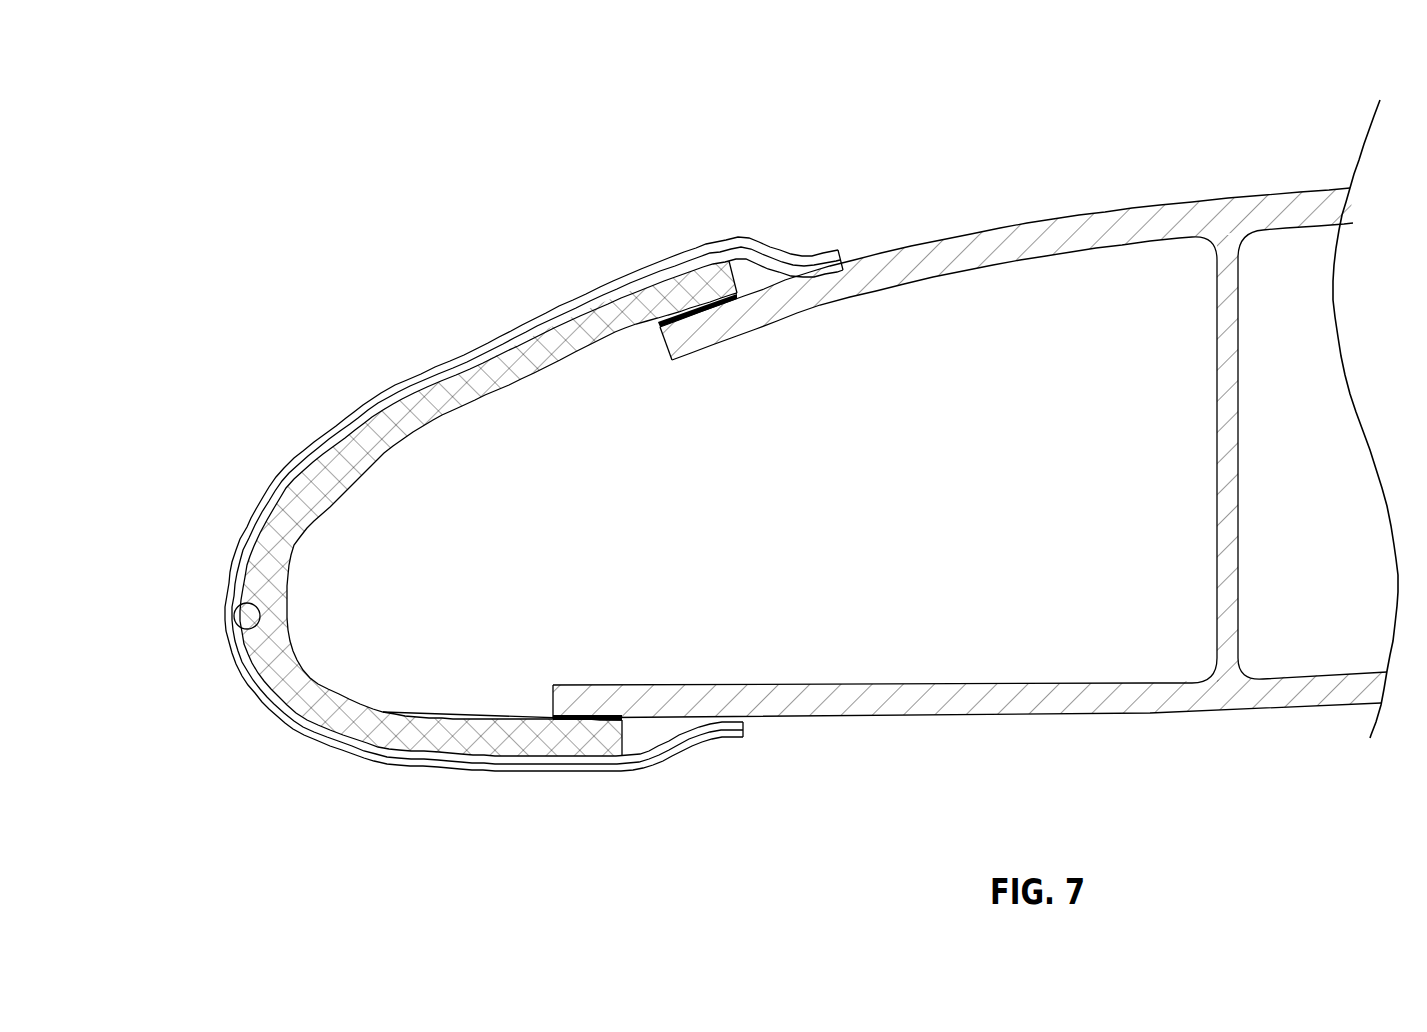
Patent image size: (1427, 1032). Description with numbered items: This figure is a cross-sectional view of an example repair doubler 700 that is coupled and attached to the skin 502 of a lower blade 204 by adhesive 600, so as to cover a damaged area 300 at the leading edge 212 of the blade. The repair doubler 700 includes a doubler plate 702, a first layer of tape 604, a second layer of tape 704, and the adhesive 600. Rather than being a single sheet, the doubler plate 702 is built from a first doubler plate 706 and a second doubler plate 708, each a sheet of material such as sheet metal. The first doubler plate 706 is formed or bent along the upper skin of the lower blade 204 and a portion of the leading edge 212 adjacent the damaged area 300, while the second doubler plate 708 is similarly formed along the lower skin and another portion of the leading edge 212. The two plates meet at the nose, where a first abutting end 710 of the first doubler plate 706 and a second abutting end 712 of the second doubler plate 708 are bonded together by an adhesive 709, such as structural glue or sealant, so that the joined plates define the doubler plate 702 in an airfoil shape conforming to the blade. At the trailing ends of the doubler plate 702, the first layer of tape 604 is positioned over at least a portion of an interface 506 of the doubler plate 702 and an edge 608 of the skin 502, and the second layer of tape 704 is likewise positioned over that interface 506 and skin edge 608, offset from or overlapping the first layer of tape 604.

The lower blade 204 is at (915, 125).
The damaged area 300 is at (680, 452).
The skin 502 is at (1025, 225).
The interface 506 is at (645, 735).
The adhesive 600 is at (737, 300).
The first layer of tape 604 is at (738, 713).
The edge of the skin 608 is at (552, 700).
The leading edge 212 is at (737, 322).
The repair doubler 700 is at (241, 813).
The doubler plate 702 is at (397, 510).
The second layer of tape 704 is at (480, 345).
The first doubler plate 706 is at (385, 430).
The second doubler plate 708 is at (386, 748).
The adhesive 709 is at (262, 616).
The first abutting end 710 is at (247, 604).
The second abutting end 712 is at (243, 640).